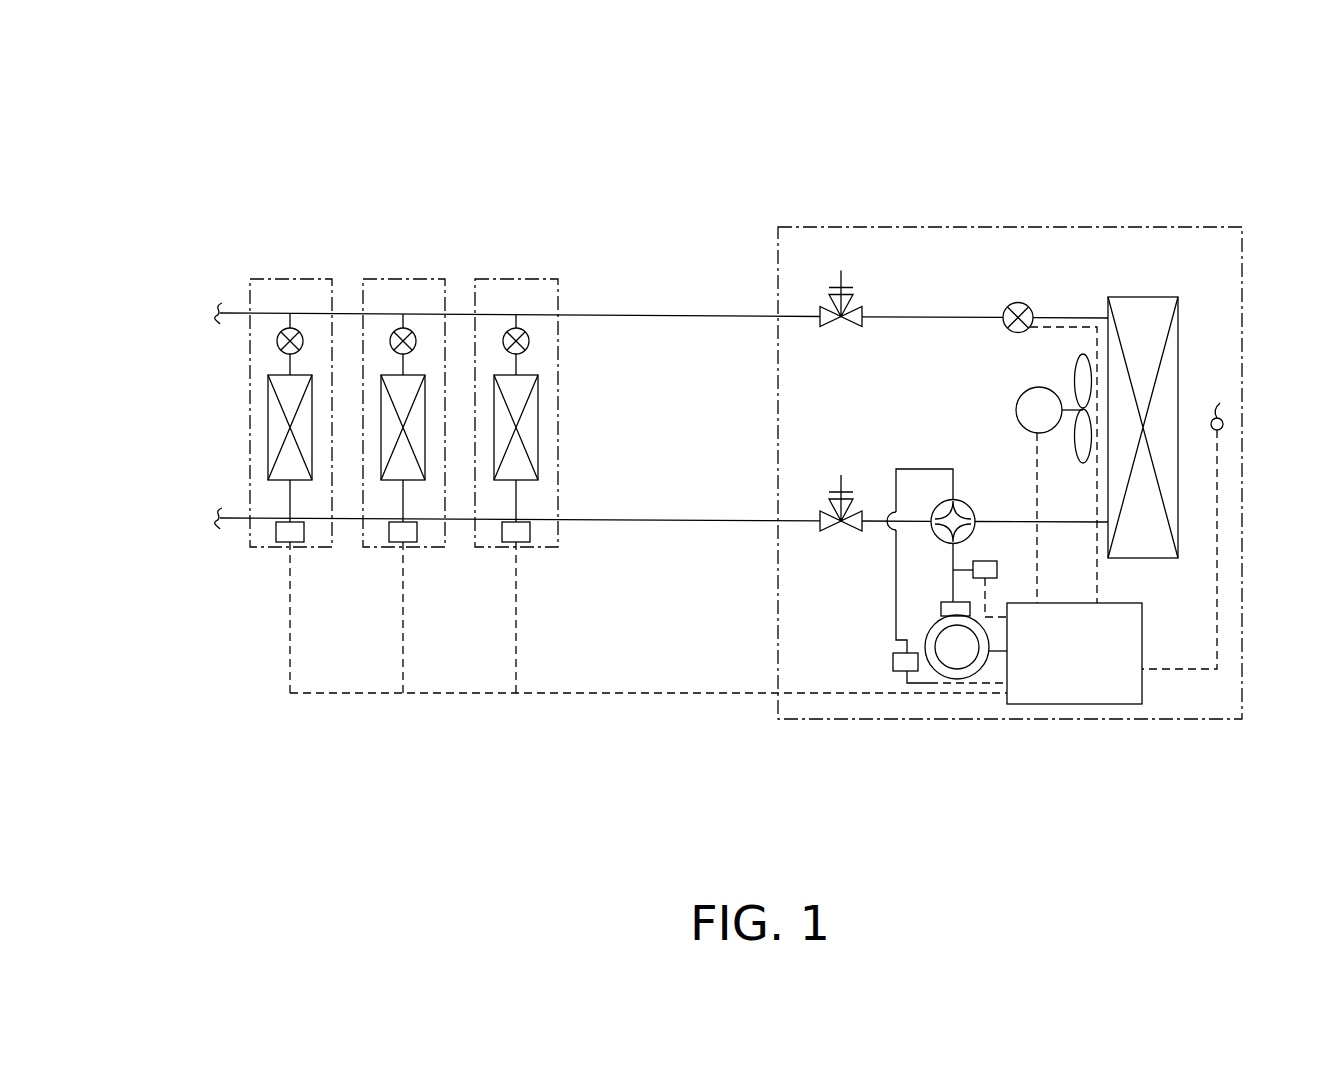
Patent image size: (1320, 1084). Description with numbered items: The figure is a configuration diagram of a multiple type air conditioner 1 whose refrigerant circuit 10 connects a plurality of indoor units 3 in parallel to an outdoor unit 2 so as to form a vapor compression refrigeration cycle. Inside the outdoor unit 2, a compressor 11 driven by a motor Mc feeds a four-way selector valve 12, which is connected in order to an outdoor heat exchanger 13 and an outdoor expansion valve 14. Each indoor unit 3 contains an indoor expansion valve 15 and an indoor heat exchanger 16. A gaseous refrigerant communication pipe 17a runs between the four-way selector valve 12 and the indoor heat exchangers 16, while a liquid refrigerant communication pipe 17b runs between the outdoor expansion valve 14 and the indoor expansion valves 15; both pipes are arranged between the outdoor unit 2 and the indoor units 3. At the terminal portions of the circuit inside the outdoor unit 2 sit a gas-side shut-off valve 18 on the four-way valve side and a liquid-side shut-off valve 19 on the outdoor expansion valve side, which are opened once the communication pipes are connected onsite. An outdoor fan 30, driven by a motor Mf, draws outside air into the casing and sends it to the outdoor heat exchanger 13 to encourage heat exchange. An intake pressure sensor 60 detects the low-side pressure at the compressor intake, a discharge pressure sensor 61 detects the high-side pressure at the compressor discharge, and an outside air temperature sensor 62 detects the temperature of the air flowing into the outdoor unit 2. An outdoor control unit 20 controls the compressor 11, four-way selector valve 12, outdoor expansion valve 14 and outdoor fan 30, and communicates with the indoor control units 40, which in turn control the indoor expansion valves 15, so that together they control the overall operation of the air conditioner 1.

The air conditioner 1 is at (408, 183).
The outdoor unit 2 is at (1135, 224).
The indoor unit 3 is at (265, 276).
The refrigerant circuit 10 is at (661, 406).
The compressor 11 is at (935, 670).
The four-way selector valve 12 is at (972, 503).
The outdoor heat exchanger 13 is at (1143, 558).
The outdoor expansion valve 14 is at (1027, 305).
The indoor expansion valve 15 is at (278, 343).
The indoor heat exchanger 16 is at (270, 427).
The gaseous refrigerant communication pipe 17a is at (661, 524).
The liquid refrigerant communication pipe 17b is at (625, 313).
The gas-side shut-off valve 18 is at (834, 538).
The liquid-side shut-off valve 19 is at (852, 276).
The outdoor control unit 20 is at (1105, 695).
The outdoor fan 30 is at (1075, 370).
The indoor control unit 40 is at (277, 537).
The intake pressure sensor 60 is at (893, 672).
The discharge pressure sensor 61 is at (996, 563).
The outside air temperature sensor 62 is at (1222, 420).